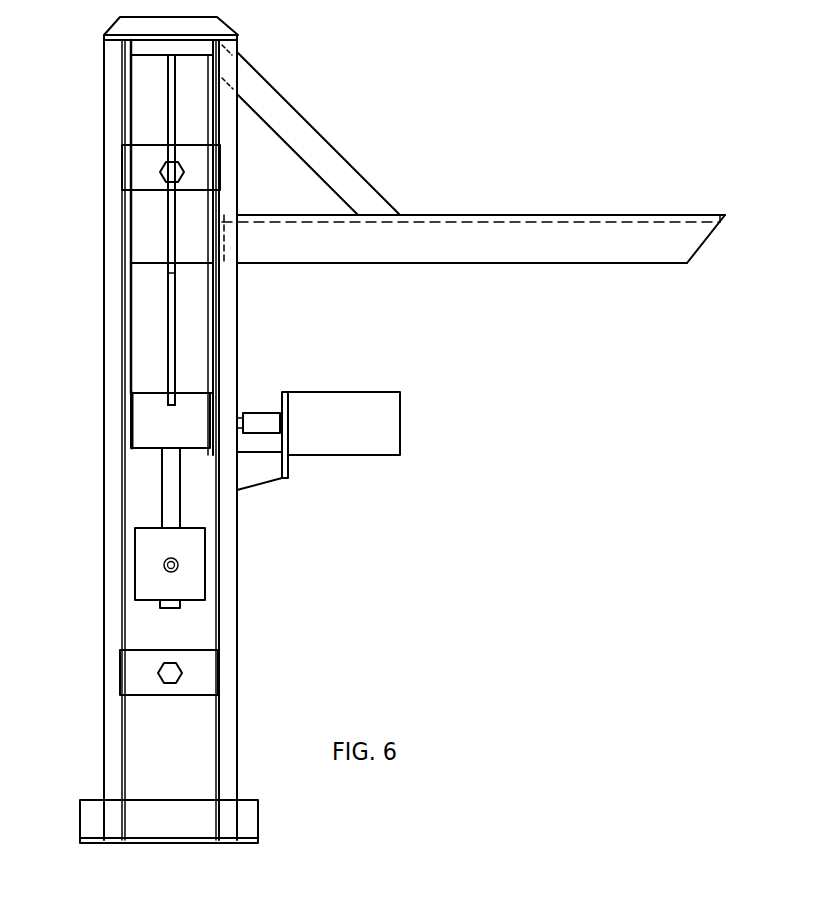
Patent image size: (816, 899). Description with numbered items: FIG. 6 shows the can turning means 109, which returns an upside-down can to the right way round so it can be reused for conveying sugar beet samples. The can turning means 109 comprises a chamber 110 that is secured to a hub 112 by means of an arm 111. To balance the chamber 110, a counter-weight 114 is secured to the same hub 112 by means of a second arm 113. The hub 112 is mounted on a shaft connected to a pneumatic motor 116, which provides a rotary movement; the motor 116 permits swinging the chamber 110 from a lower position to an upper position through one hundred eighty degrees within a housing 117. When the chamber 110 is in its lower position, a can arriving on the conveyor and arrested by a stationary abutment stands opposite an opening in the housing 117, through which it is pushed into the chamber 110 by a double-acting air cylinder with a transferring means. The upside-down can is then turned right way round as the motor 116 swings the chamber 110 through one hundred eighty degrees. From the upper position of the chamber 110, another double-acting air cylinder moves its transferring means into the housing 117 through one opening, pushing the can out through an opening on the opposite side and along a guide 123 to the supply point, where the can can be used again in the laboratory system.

The can turning means 109 is at (100, 246).
The chamber 110 is at (200, 118).
The arm 111 is at (177, 340).
The hub 112 is at (142, 423).
The arm 113 is at (167, 478).
The counter-weight 114 is at (145, 563).
The pneumatic motor 116 is at (390, 437).
The housing 117 is at (122, 101).
The guide 123 is at (520, 253).